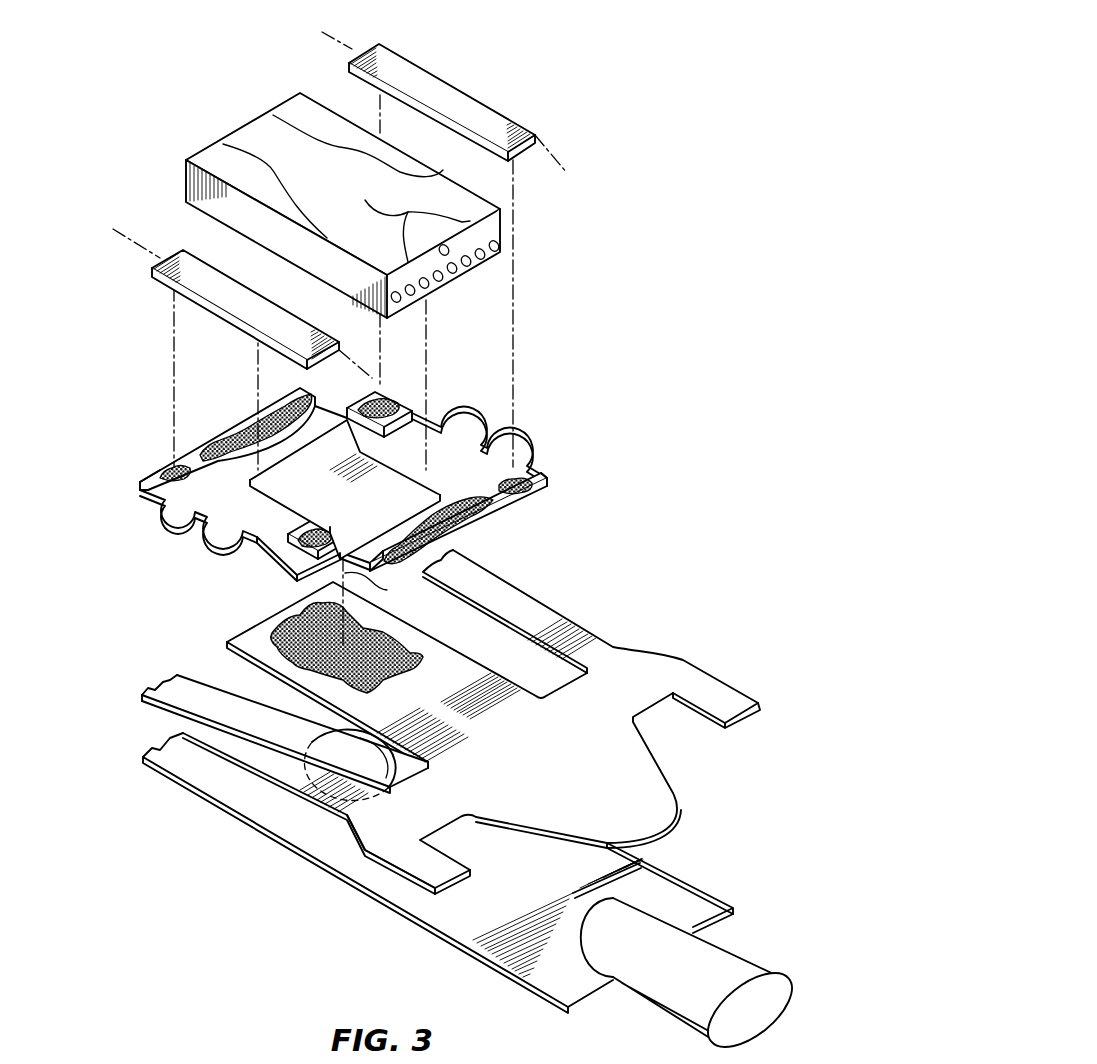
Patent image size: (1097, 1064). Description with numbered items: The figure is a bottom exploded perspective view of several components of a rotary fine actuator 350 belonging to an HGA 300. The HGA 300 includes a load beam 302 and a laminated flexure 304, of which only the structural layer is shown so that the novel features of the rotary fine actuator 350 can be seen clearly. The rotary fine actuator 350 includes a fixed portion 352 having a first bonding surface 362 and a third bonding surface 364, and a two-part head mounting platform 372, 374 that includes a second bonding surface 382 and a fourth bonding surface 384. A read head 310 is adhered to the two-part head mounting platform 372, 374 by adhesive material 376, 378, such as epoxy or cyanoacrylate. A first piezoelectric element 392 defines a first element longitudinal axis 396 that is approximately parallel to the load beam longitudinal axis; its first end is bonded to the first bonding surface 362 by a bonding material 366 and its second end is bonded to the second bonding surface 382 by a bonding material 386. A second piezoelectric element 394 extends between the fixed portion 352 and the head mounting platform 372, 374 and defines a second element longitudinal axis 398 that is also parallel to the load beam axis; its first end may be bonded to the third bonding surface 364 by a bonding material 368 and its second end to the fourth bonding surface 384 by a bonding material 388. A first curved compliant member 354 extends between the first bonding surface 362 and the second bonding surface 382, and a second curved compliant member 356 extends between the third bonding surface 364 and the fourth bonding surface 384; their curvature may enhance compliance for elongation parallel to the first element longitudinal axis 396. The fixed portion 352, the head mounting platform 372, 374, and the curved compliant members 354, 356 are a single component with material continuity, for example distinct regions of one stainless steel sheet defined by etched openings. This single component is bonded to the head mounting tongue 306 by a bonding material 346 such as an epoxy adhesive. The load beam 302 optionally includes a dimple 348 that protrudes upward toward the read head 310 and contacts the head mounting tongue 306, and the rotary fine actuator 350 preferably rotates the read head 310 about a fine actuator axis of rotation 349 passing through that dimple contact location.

The HGA 300 is at (680, 95).
The load beam 302 is at (697, 897).
The laminated flexure 304 is at (613, 650).
The head mounting tongue 306 is at (435, 675).
The read head 310 is at (253, 134).
The bonding material 346 is at (257, 660).
The dimple 348 is at (323, 743).
The fine actuator axis of rotation 349 is at (385, 589).
The rotary fine actuator 350 is at (680, 291).
The fixed portion 352 is at (345, 489).
The first curved compliant member 354 is at (213, 546).
The second curved compliant member 356 is at (458, 412).
The first bonding surface 362 is at (292, 558).
The third bonding surface 364 is at (394, 397).
The bonding material 366 is at (297, 535).
The bonding material 368 is at (371, 404).
The head mounting platform 372 is at (241, 420).
The head mounting platform 374 is at (453, 494).
The adhesive material 376 is at (208, 443).
The adhesive material 378 is at (478, 527).
The second bonding surface 382 is at (142, 493).
The fourth bonding surface 384 is at (533, 475).
The bonding material 386 is at (160, 465).
The bonding material 388 is at (530, 496).
The first piezoelectric element 392 is at (218, 283).
The second piezoelectric element 394 is at (468, 112).
The first element longitudinal axis 396 is at (131, 238).
The second element longitudinal axis 398 is at (550, 165).